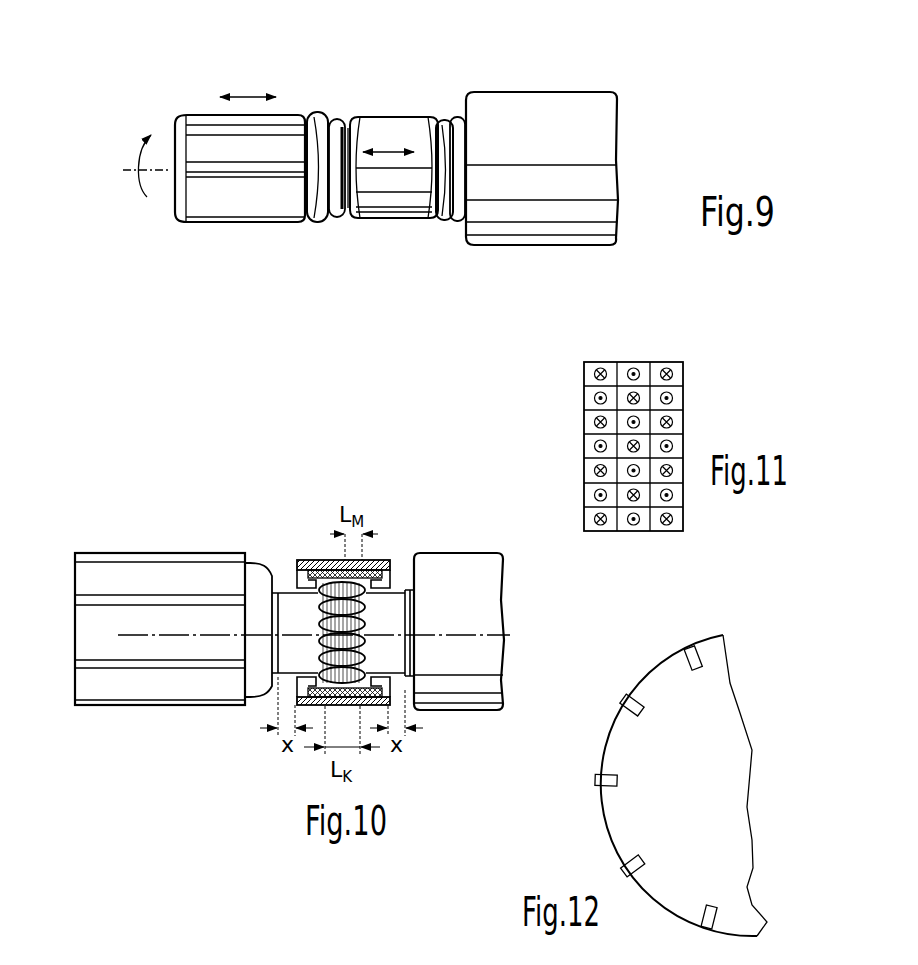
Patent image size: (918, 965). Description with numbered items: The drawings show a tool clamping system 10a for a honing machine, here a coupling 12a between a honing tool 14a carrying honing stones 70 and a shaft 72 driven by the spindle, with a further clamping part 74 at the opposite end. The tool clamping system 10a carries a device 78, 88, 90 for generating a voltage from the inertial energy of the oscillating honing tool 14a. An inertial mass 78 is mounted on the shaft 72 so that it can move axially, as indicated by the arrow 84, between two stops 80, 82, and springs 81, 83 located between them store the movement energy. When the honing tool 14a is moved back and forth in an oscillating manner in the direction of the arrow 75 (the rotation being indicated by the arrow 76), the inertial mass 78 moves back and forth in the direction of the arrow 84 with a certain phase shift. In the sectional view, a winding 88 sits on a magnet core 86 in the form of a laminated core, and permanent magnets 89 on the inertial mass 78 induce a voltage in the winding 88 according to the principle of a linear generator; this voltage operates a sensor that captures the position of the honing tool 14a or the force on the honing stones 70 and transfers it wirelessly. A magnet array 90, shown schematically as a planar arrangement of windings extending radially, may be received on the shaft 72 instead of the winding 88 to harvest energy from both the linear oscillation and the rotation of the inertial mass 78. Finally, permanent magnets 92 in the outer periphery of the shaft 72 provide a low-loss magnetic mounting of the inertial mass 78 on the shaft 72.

In FIG. 9, the tool clamping system 10a is at (557, 70).
In FIG. 10, the tool clamping system 10a is at (392, 497).
In FIG. 9, the coupling 12a is at (293, 97).
In FIG. 9, the honing tool 14a is at (257, 203).
In FIG. 10, the honing tool 14a is at (148, 697).
In FIG. 9, the honing stones 70 is at (222, 172).
In FIG. 10, the honing stones 70 is at (172, 566).
In FIG. 9, the shaft 72 is at (346, 152).
In FIG. 10, the shaft 72 is at (290, 612).
In FIG. 12, the shaft 72 is at (704, 713).
In FIG. 9, the second coupling part 74 is at (585, 130).
In FIG. 10, the second coupling part 74 is at (455, 595).
In FIG. 9, the arrow 75 is at (244, 97).
In FIG. 9, the rotation arrow 76 is at (140, 165).
In FIG. 9, the inertial mass 78 is at (409, 132).
In FIG. 10, the inertial mass 78 is at (310, 560).
In FIG. 12, the inertial mass 78 is at (693, 615).
In FIG. 9, the stop 80 is at (315, 208).
In FIG. 9, the spring 81 is at (338, 212).
In FIG. 9, the stop 82 is at (447, 202).
In FIG. 9, the spring 83 is at (441, 150).
In FIG. 9, the arrow 84 is at (392, 148).
In FIG. 10, the magnet core 86 is at (330, 560).
In FIG. 10, the winding 88 is at (382, 560).
In FIG. 10, the permanent magnets 89 is at (316, 580).
In FIG. 11, the magnet array 90 is at (653, 362).
In FIG. 12, the permanent magnets 92 is at (598, 780).